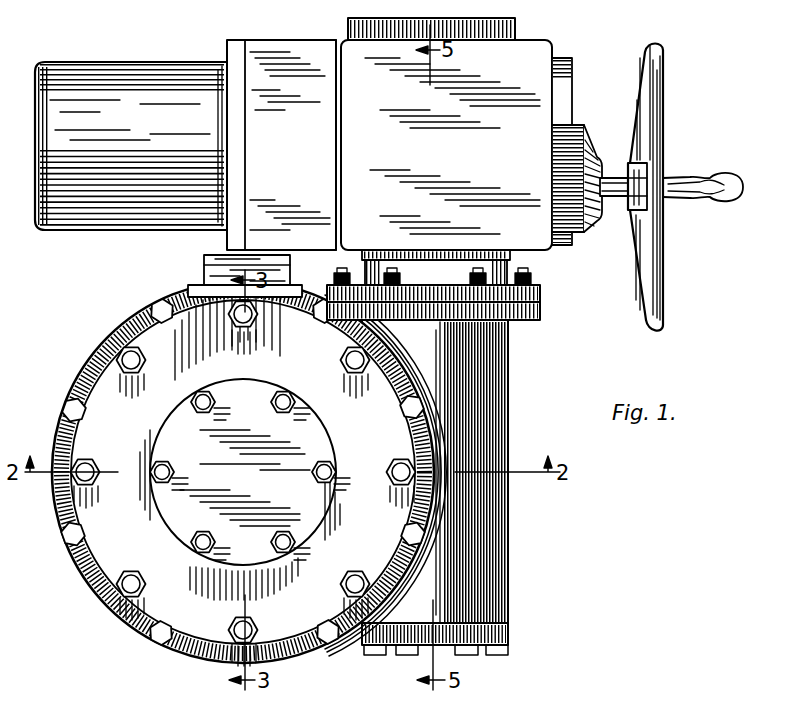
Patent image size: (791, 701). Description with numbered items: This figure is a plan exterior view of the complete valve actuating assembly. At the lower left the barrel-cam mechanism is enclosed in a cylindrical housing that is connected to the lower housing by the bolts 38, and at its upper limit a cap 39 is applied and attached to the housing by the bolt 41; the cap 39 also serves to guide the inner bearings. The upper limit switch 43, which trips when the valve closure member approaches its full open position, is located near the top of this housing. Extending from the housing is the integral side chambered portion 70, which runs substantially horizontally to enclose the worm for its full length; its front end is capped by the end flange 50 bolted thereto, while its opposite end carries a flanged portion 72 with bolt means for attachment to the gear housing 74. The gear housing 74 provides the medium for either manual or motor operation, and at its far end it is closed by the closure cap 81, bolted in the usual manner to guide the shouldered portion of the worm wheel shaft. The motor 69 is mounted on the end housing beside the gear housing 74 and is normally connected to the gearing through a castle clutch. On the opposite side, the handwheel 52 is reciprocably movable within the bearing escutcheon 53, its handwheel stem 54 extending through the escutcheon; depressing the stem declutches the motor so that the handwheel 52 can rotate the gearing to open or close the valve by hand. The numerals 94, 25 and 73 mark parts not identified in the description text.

The motor 69 is at (92, 62).
The closure cap 81 is at (517, 29).
The gear housing 74 is at (535, 53).
The bearing housing 94 is at (565, 88).
The bearing escutcheon 53 is at (578, 150).
The handwheel stem 54 is at (613, 178).
The handwheel 52 is at (652, 282).
The upper limit switch 43 is at (204, 277).
The bolt 41 is at (129, 345).
The cap 39 is at (108, 383).
The bolts 38 is at (72, 403).
The valve body 25 is at (177, 523).
The upper flange 73 is at (541, 291).
The flanged portion 72 is at (541, 308).
The side chambered portion 70 is at (508, 560).
The end flange 50 is at (500, 636).